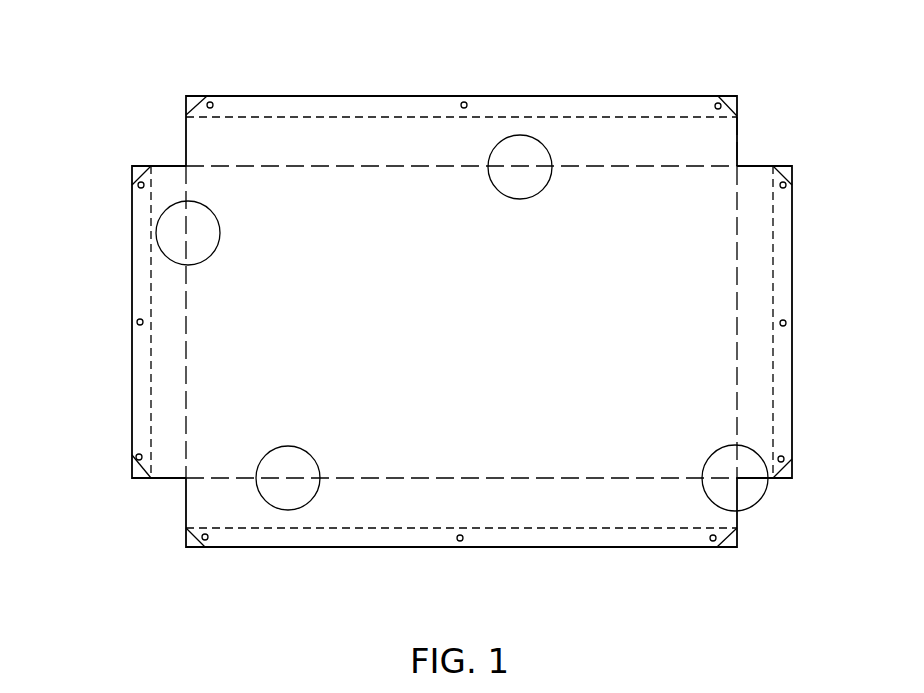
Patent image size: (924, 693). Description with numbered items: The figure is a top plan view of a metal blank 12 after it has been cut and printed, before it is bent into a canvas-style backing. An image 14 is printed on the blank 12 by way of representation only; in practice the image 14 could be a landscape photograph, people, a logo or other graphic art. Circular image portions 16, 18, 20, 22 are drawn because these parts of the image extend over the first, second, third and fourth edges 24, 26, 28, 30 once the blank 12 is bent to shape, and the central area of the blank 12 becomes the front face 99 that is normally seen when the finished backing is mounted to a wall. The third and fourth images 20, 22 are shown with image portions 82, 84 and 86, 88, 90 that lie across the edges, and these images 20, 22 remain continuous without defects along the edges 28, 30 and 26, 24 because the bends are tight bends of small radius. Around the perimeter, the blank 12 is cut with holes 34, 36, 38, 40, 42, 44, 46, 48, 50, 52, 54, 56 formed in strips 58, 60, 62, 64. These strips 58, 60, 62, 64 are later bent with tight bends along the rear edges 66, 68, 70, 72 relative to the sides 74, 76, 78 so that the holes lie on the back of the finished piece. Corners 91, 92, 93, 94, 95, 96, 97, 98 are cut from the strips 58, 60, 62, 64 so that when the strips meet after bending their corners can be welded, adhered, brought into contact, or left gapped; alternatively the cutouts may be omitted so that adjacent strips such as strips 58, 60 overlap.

The metal blank 12 is at (752, 150).
The image 14 is at (596, 190).
The circular image portion 16 is at (503, 183).
The circular image portion 18 is at (195, 245).
The circular image portion 20 is at (300, 487).
The circular image portion 22 is at (727, 462).
The first edge 24 is at (650, 166).
The second edge 26 is at (130, 360).
The third edge 28 is at (400, 478).
The fourth edge 30 is at (738, 262).
The hole 34 is at (786, 185).
The hole 36 is at (786, 323).
The hole 38 is at (795, 452).
The hole 40 is at (713, 541).
The hole 42 is at (460, 541).
The hole 44 is at (205, 540).
The hole 46 is at (136, 457).
The hole 48 is at (137, 322).
The hole 50 is at (138, 185).
The hole 52 is at (207, 100).
The hole 54 is at (464, 102).
The hole 56 is at (719, 103).
The strip 58 is at (780, 360).
The strip 60 is at (610, 540).
The strip 62 is at (140, 420).
The strip 64 is at (300, 110).
The rear edge 66 is at (778, 232).
The rear edge 68 is at (523, 528).
The rear edge 70 is at (150, 390).
The rear edge 72 is at (236, 115).
The side 74 is at (755, 282).
The side 76 is at (650, 517).
The side 78 is at (172, 299).
The image portion 82 is at (318, 465).
The image portion 84 is at (290, 500).
The image portion 86 is at (732, 532).
The image portion 88 is at (724, 507).
The image portion 90 is at (388, 153).
The corner 91 is at (792, 478).
The corner 92 is at (737, 535).
The corner 93 is at (188, 547).
The corner 94 is at (130, 477).
The corner 95 is at (133, 166).
The corner 96 is at (188, 98).
The corner 97 is at (740, 98).
The corner 98 is at (790, 166).
The front face 99 is at (540, 415).